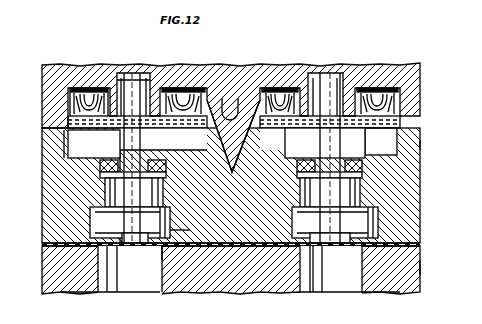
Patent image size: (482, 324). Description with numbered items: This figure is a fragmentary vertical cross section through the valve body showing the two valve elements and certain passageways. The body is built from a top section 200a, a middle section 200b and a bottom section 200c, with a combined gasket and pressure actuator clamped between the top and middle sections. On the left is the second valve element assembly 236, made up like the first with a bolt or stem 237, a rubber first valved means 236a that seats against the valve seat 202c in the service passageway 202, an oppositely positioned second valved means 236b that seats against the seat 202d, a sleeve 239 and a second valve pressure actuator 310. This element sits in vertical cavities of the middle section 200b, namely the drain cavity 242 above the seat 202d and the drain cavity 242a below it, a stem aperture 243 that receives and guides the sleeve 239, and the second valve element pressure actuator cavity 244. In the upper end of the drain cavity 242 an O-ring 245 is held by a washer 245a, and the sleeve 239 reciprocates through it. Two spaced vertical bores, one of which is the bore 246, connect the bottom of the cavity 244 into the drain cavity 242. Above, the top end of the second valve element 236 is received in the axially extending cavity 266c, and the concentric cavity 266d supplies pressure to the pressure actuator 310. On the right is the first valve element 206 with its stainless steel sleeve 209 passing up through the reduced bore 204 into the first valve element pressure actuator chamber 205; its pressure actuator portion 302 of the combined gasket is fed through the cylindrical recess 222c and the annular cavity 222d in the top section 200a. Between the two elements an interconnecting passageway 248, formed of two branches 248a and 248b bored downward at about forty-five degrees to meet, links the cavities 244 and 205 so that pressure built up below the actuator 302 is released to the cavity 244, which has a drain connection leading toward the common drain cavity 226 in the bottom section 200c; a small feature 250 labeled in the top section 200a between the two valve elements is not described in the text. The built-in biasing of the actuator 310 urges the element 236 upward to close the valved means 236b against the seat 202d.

The top section 200a is at (418, 68).
The middle section 200b is at (412, 178).
The bottom section 200c is at (414, 270).
The service passageway 202 is at (451, 267).
The valve seat 202c is at (173, 252).
The valve seat 202d is at (88, 212).
The reduced bore 204 is at (362, 167).
The first valve element pressure actuator chamber 205 is at (398, 135).
The first valve element 206 is at (336, 80).
The sleeve 209 is at (324, 143).
The cylindrical recess 222c is at (318, 76).
The annular cavity 222d is at (267, 88).
The common drain cavity 226 is at (238, 247).
The second valve element assembly 236 is at (141, 77).
The first valved means 236a is at (120, 250).
The second valved means 236b is at (130, 200).
The bolt or stem 237 is at (115, 93).
The sleeve 239 is at (168, 198).
The drain cavity 242 is at (110, 190).
The drain cavity 242a is at (180, 228).
The stem aperture 243 is at (451, 146).
The second valve element pressure actuator cavity 244 is at (67, 140).
The O-ring 245 is at (172, 172).
The washer 245a is at (175, 143).
The bore 246 is at (104, 156).
The interconnecting passageway 248 is at (210, 155).
The branch 248a is at (260, 153).
The branch 248b is at (248, 170).
The groove 250 is at (232, 98).
The axially extending cavity 266c is at (125, 77).
The concentric cavity 266d is at (68, 90).
The pressure actuator portion 302 is at (420, 110).
The second valve pressure actuator 310 is at (167, 92).